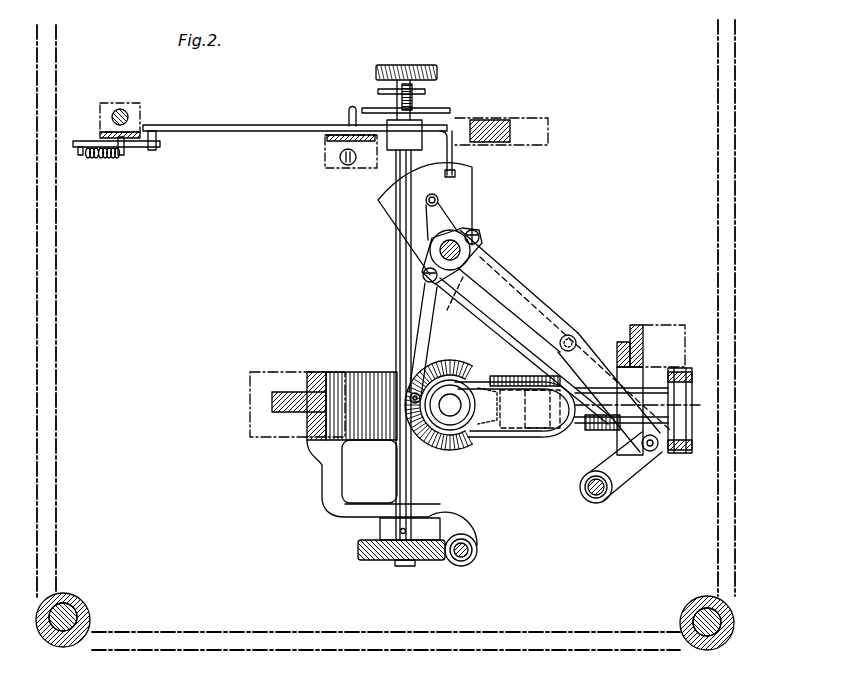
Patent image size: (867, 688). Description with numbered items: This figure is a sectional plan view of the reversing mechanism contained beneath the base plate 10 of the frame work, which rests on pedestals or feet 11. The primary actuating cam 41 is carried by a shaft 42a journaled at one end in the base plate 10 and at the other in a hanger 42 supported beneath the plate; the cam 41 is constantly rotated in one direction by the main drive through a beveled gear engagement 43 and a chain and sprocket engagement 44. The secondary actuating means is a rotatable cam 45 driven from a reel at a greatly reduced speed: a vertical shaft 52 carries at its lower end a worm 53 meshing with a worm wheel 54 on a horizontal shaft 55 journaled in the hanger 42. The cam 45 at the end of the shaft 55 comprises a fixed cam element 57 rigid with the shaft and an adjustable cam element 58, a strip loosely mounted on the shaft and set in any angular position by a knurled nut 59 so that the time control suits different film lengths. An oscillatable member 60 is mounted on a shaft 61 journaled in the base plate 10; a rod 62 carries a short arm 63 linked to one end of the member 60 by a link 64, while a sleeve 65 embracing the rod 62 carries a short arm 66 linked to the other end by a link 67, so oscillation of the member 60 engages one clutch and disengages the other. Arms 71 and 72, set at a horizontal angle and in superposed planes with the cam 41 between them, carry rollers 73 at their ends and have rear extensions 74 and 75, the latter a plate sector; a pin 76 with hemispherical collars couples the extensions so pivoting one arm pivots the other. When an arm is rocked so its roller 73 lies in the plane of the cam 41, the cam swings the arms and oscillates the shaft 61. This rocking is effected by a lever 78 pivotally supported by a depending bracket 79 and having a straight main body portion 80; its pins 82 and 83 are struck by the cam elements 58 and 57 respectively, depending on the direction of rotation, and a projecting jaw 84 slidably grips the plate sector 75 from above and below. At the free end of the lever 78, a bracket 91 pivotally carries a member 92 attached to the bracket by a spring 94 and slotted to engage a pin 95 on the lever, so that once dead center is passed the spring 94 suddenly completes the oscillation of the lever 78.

The base plate 10 is at (230, 632).
The pedestals or feet 11 is at (80, 608).
The cam 41 is at (517, 440).
The hanger 42 is at (338, 505).
The shaft 42a is at (450, 400).
The beveled gear engagement 43 is at (447, 450).
The chain and sprocket engagement 44 is at (680, 453).
The rotatable cam 45 is at (463, 95).
The vertical shaft 52 is at (462, 566).
The worm 53 is at (478, 548).
The worm wheel 54 is at (372, 562).
The horizontal shaft 55 is at (400, 470).
The fixed cam element 57 is at (452, 110).
The adjustable cam element 58 is at (378, 91).
The knurled nut 59 is at (408, 64).
The oscillatable member 60 is at (479, 233).
The shaft 61 is at (452, 240).
The rod 62 is at (600, 500).
The short arm 63 is at (628, 446).
The link 64 is at (507, 335).
The sleeve 65 is at (580, 487).
The short arm 66 is at (617, 468).
The link 67 is at (587, 367).
The arm 71 is at (564, 330).
The arm 72 is at (436, 340).
The projections or rollers 73 is at (574, 338).
The rear extension 74 is at (442, 221).
The plate sector 75 is at (390, 208).
The pin 76 is at (432, 194).
The lever 78 is at (383, 150).
The depending bracket 79 is at (331, 170).
The main body portion 80 is at (243, 132).
The pin 82 is at (414, 106).
The pin 83 is at (348, 110).
The jaw 84 is at (455, 157).
The bracket 91 is at (136, 116).
The member 92 is at (141, 148).
The spring 94 is at (103, 157).
The pin 95 is at (158, 138).